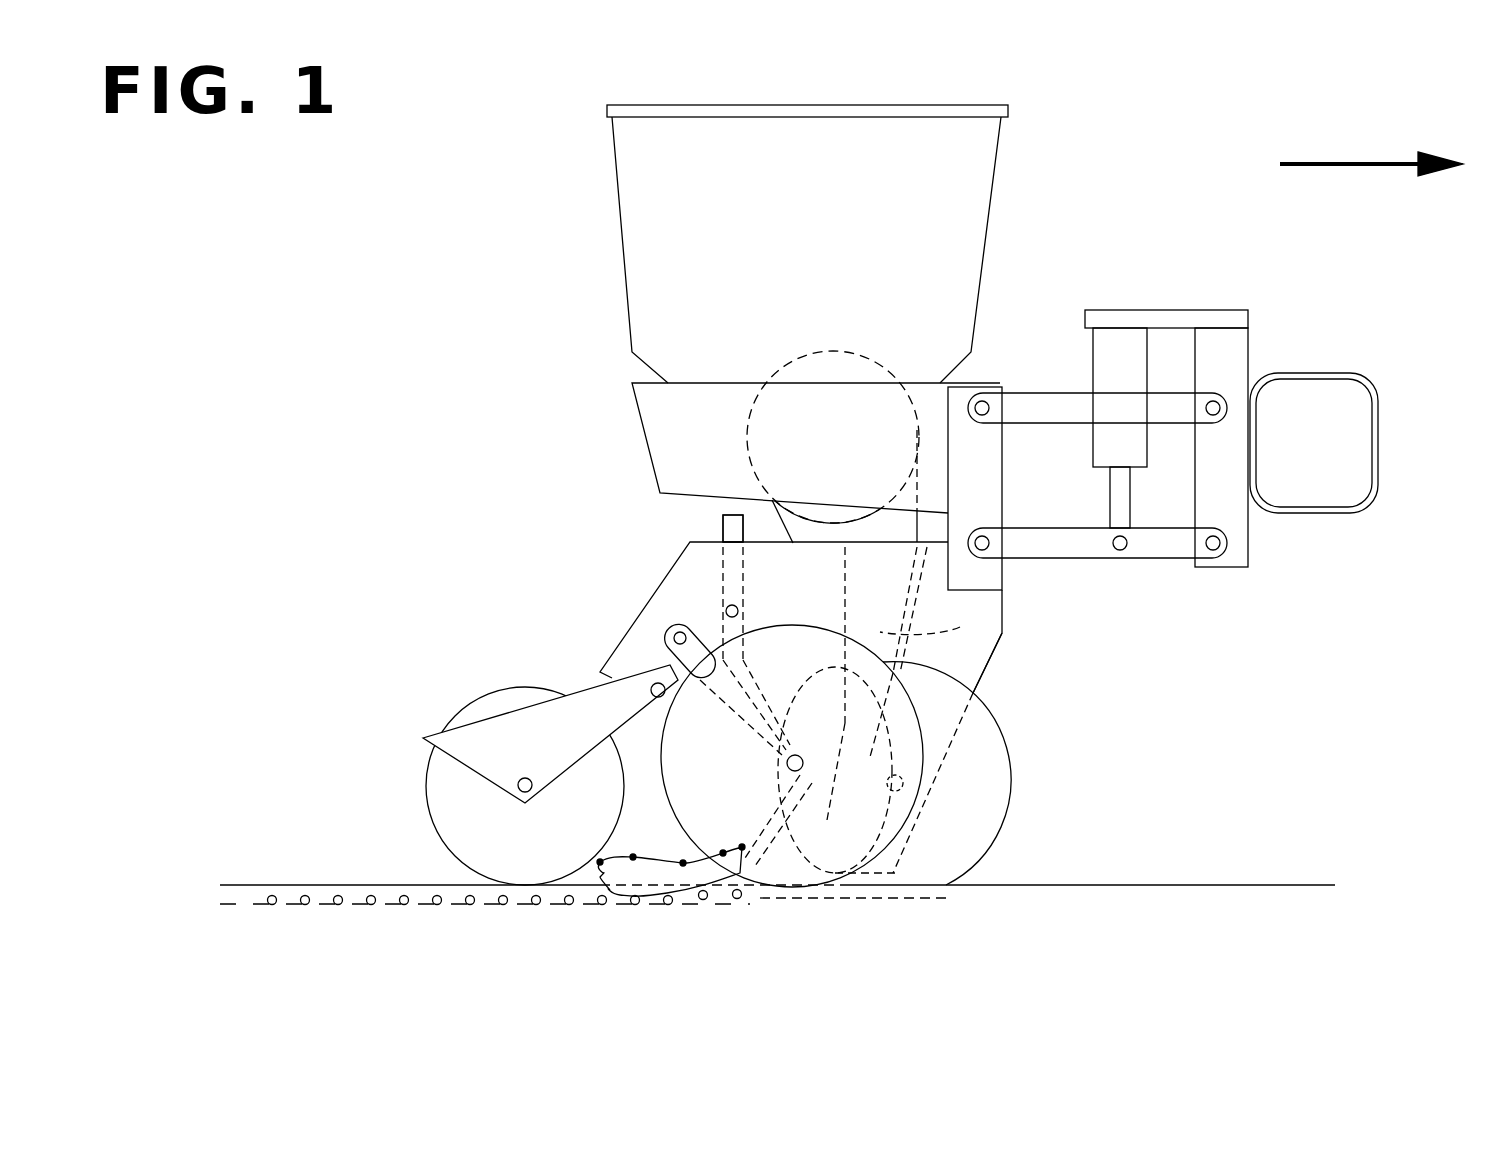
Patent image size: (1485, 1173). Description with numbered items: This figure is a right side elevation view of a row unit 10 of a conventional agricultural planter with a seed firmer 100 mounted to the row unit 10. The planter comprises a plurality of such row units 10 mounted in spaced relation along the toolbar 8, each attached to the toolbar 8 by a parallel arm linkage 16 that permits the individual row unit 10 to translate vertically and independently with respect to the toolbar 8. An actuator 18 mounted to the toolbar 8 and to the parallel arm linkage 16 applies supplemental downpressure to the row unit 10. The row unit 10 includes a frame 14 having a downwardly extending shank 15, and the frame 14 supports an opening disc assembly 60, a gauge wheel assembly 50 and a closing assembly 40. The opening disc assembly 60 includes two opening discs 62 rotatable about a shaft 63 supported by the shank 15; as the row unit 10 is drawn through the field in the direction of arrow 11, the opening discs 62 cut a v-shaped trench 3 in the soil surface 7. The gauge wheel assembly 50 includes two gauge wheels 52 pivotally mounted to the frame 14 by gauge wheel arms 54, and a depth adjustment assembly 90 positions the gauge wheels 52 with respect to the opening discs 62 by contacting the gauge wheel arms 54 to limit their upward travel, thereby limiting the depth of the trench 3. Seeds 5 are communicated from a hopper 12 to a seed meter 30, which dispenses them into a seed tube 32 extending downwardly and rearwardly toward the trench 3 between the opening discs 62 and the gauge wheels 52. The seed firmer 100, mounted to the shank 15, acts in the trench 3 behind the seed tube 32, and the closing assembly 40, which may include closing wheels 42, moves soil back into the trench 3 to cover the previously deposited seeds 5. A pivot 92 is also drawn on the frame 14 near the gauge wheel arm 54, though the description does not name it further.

The trench 3 is at (788, 893).
The seeds 5 is at (568, 905).
The soil surface 7 is at (1218, 885).
The toolbar 8 is at (1322, 373).
The row unit 10 is at (1121, 190).
The arrow 11 is at (1375, 163).
The hopper 12 is at (807, 244).
The frame 14 is at (657, 597).
The shank 15 is at (987, 667).
The parallel arm linkage 16 is at (1098, 494).
The actuator 18 is at (1120, 428).
The seed meter 30 is at (750, 462).
The seed tube 32 is at (960, 627).
The closing assembly 40 is at (513, 744).
The closing wheels 42 is at (452, 817).
The gauge wheel assembly 50 is at (775, 756).
The gauge wheels 52 is at (660, 790).
The gauge wheel arms 54 is at (672, 650).
The opening disc assembly 60 is at (1010, 773).
The opening discs 62 is at (947, 773).
The shaft 63 is at (903, 768).
The depth adjustment assembly 90 is at (710, 583).
The pivot 92 is at (726, 612).
The seed firmer 100 is at (617, 910).